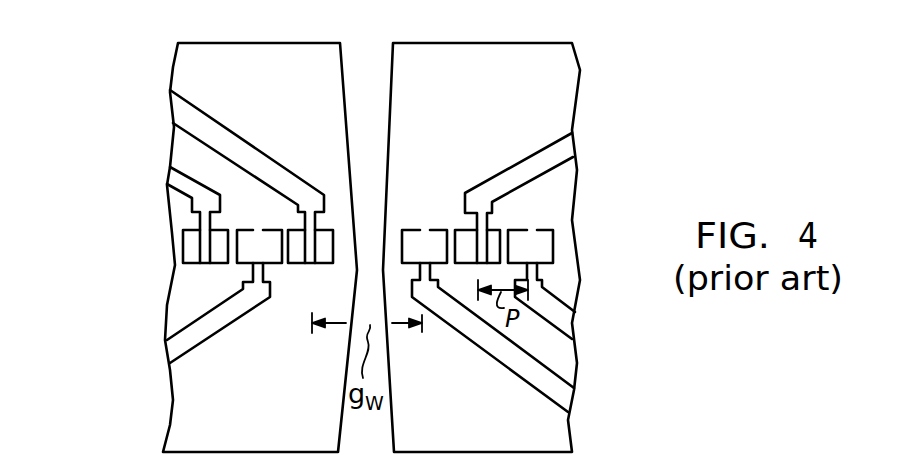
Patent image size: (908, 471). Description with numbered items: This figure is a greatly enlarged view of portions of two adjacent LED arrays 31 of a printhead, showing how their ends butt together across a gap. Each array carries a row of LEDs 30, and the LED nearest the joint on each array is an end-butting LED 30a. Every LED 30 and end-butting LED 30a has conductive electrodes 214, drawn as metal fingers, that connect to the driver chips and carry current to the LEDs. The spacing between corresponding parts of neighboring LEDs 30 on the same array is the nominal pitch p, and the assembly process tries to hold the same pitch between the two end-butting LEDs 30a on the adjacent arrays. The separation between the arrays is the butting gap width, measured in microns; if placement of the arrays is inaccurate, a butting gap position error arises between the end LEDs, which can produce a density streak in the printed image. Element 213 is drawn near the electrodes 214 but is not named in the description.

The LED array 31 is at (188, 64).
The conductive electrode 214 is at (197, 188).
The LED 30 is at (247, 255).
The end-butting LED 30a is at (413, 227).
The electrode 213 is at (296, 266).